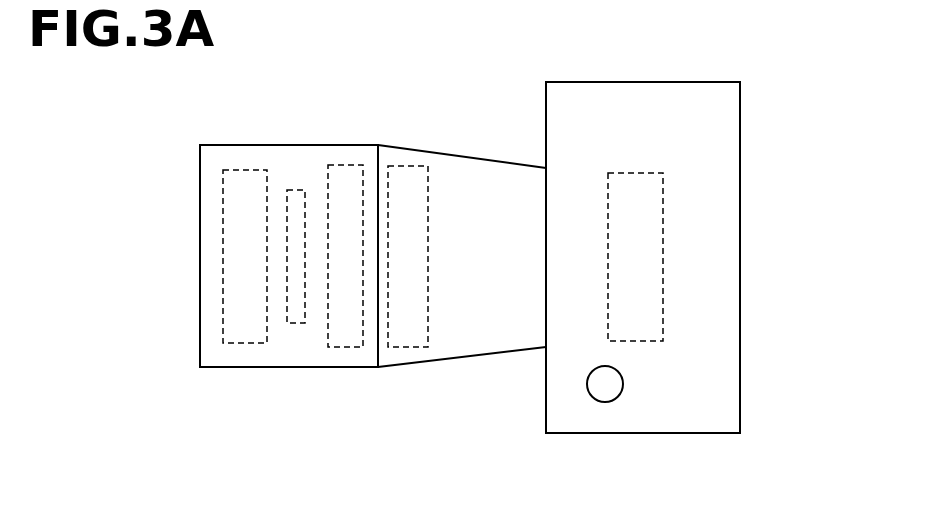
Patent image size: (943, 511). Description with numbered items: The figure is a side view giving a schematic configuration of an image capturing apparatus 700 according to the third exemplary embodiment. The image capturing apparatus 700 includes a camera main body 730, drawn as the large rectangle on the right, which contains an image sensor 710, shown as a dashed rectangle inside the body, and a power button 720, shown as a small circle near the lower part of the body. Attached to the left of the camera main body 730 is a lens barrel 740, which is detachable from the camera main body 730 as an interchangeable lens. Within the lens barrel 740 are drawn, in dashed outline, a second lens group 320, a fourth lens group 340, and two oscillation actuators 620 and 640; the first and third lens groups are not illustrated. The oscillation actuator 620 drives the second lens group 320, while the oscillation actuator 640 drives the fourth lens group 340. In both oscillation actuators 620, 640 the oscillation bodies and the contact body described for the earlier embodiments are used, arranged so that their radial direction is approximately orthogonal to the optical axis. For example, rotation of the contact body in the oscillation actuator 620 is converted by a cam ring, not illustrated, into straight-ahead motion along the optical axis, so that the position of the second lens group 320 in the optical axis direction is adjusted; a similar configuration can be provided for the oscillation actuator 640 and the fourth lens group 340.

The image capturing apparatus 700 is at (520, 77).
The image sensor 710 is at (652, 264).
The power button 720 is at (605, 393).
The camera main body 730 is at (680, 418).
The lens barrel 740 is at (278, 160).
The second lens group 320 is at (245, 333).
The fourth lens group 340 is at (291, 326).
The oscillation actuator 620 is at (348, 166).
The oscillation actuator 640 is at (411, 167).